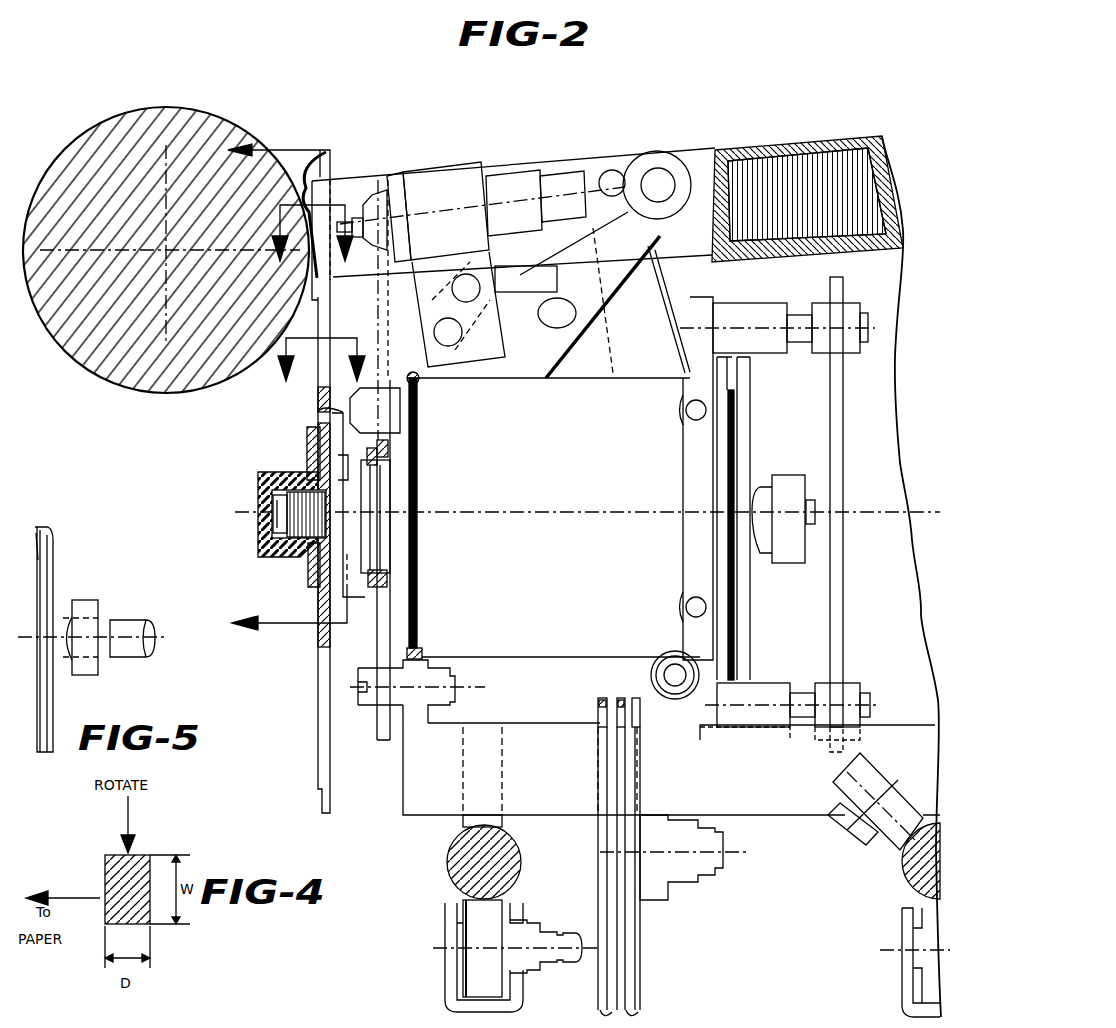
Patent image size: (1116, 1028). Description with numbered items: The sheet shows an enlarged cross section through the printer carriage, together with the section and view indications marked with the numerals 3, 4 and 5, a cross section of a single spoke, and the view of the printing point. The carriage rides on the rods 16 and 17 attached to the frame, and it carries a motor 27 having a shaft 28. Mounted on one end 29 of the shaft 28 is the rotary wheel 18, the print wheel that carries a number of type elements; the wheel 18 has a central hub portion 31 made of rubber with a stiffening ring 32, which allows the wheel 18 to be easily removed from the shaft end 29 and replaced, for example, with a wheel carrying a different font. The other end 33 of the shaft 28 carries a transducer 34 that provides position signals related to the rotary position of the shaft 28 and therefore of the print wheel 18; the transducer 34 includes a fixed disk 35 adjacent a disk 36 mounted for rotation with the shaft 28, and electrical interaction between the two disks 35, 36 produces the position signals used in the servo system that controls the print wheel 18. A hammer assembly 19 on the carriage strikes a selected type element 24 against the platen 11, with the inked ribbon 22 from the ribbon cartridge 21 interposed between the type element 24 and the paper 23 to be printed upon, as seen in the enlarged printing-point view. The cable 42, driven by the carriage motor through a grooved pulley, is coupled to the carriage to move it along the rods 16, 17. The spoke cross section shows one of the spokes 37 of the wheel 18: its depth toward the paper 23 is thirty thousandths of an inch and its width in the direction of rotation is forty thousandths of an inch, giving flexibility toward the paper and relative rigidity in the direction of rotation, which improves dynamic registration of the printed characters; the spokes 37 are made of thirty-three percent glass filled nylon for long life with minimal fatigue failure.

In FIG. 2, the platen 11 is at (180, 92).
In FIG. 2, the rod 16 is at (905, 862).
In FIG. 2, the rod 17 is at (450, 858).
In FIG. 2, the rotary wheel 18 is at (318, 718).
In FIG. 2, the hammer assembly 19 is at (437, 178).
In FIG. 5, the hammer assembly 19 is at (135, 625).
In FIG. 2, the ribbon cartridge 21 is at (762, 150).
In FIG. 2, the inked ribbon 22 is at (318, 165).
In FIG. 5, the inked ribbon 22 is at (54, 570).
In FIG. 5, the paper 23 is at (34, 530).
In FIG. 2, the type element 24 is at (310, 1027).
In FIG. 5, the type element 24 is at (64, 620).
In FIG. 2, the motor 27 is at (544, 578).
In FIG. 2, the shaft 28 is at (825, 510).
In FIG. 2, the end of shaft 29 is at (308, 472).
In FIG. 2, the central hub portion 31 is at (258, 490).
In FIG. 2, the stiffening ring 32 is at (265, 532).
In FIG. 2, the other end of shaft 33 is at (760, 492).
In FIG. 2, the transducer 34 is at (745, 656).
In FIG. 2, the fixed disk 35 is at (718, 364).
In FIG. 2, the disk 36 is at (746, 358).
In FIG. 2, the spoke 37 is at (282, 1027).
In FIG. 4, the spoke 37 is at (104, 862).
In FIG. 2, the cable 42 is at (622, 1010).
In FIG. 2, the section line 3- 3 is at (287, 386).
In FIG. 2, the section line 4- 4 is at (322, 368).
In FIG. 2, the section line 5- 5 is at (318, 246).